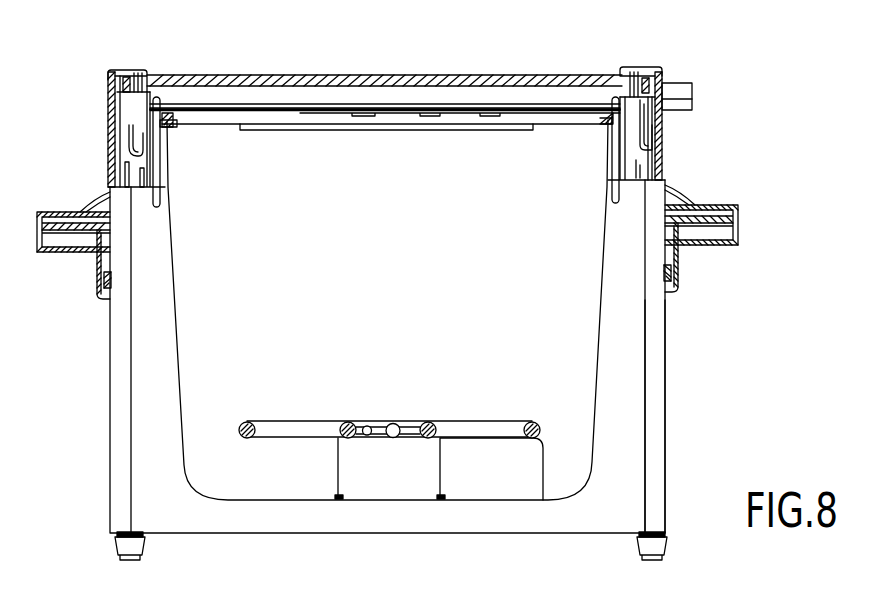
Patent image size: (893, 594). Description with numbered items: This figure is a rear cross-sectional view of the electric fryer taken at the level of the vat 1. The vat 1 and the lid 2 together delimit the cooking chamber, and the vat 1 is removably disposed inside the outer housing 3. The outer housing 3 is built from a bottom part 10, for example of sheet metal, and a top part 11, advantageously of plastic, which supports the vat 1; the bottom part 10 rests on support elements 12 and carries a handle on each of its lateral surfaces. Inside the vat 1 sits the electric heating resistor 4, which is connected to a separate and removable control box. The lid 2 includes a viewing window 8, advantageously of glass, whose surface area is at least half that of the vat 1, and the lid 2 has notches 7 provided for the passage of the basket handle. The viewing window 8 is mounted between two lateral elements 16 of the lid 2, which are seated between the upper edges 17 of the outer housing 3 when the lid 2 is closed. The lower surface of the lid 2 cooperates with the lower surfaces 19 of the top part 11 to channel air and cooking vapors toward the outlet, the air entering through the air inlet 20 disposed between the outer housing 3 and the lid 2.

The vat 1 is at (600, 332).
The lid 2 is at (643, 78).
The outer housing 3 is at (668, 431).
The electric heating resistor 4 is at (537, 440).
The notches 7 is at (353, 113).
The viewing window 8 is at (520, 80).
The bottom part 10 is at (668, 384).
The top part 11 is at (663, 128).
The support elements 12 is at (128, 560).
The lateral elements 16 is at (113, 79).
The upper edges 17 is at (112, 89).
The lower surfaces 19 is at (128, 134).
The air inlet 20 is at (301, 112).